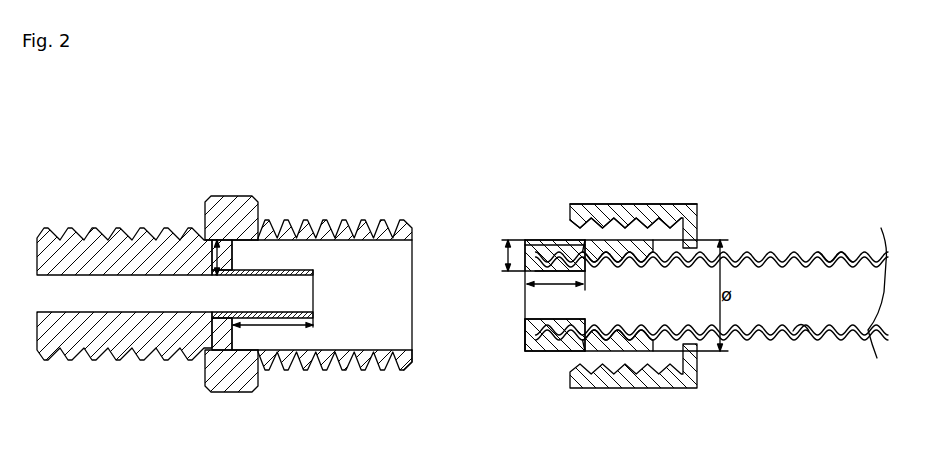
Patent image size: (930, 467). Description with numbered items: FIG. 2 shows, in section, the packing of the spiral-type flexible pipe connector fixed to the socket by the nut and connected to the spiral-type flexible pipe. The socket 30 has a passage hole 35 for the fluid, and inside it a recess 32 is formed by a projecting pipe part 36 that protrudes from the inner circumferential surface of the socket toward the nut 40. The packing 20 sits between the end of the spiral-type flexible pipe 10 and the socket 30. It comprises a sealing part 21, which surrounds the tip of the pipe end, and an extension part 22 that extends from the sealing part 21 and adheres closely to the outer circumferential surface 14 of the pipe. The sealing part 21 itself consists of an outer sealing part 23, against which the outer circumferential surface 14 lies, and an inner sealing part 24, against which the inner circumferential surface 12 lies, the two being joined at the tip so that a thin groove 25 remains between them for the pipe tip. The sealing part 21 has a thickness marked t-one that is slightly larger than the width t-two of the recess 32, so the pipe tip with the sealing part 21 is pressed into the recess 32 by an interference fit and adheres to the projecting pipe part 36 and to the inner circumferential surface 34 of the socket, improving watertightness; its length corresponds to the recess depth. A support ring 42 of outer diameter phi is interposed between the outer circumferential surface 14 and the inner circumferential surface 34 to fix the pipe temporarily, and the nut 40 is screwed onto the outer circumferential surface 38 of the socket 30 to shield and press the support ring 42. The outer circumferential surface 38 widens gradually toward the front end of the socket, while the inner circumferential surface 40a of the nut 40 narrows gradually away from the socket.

The spiral-type flexible pipe 10 is at (787, 341).
The inner circumferential surface 12 is at (809, 341).
The outer circumferential surface 14 is at (843, 337).
The packing 20 is at (572, 100).
The sealing part 21 is at (557, 132).
The extension part 22 is at (600, 240).
The outer sealing part 23 is at (562, 240).
The inner sealing part 24 is at (535, 240).
The thin groove 25 is at (562, 337).
The socket 30 is at (229, 187).
The recess 32 is at (289, 257).
The inner circumferential surface of the socket 34 is at (348, 340).
The passage hole 35 is at (92, 298).
The projecting pipe part 36 is at (300, 270).
The outer circumferential surface of the socket 38 is at (396, 371).
The nut 40 is at (690, 204).
The inner circumferential surface of the nut 40a is at (613, 204).
The support ring 42 is at (660, 240).